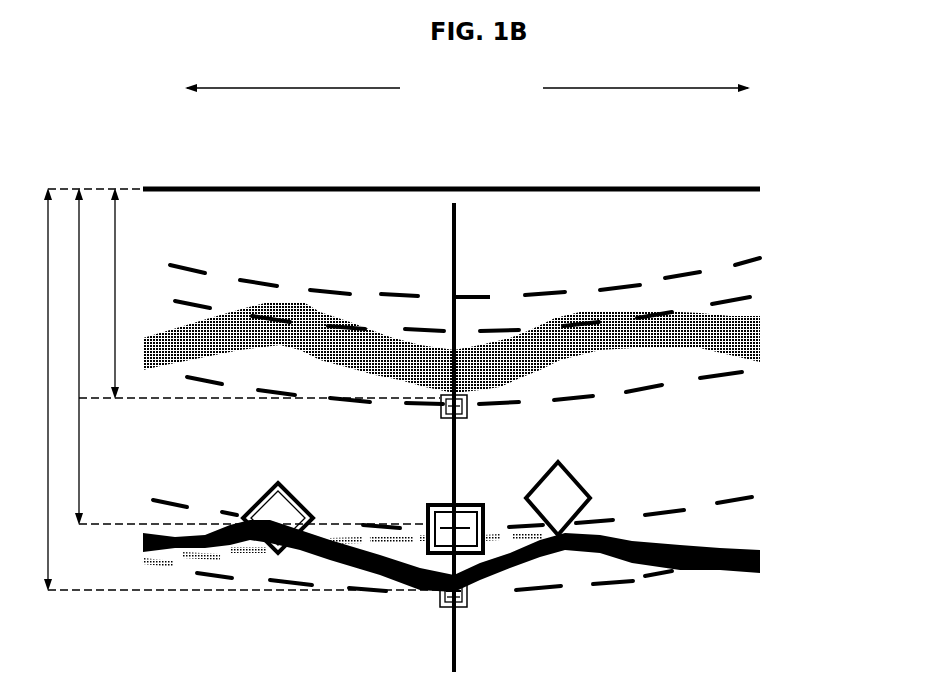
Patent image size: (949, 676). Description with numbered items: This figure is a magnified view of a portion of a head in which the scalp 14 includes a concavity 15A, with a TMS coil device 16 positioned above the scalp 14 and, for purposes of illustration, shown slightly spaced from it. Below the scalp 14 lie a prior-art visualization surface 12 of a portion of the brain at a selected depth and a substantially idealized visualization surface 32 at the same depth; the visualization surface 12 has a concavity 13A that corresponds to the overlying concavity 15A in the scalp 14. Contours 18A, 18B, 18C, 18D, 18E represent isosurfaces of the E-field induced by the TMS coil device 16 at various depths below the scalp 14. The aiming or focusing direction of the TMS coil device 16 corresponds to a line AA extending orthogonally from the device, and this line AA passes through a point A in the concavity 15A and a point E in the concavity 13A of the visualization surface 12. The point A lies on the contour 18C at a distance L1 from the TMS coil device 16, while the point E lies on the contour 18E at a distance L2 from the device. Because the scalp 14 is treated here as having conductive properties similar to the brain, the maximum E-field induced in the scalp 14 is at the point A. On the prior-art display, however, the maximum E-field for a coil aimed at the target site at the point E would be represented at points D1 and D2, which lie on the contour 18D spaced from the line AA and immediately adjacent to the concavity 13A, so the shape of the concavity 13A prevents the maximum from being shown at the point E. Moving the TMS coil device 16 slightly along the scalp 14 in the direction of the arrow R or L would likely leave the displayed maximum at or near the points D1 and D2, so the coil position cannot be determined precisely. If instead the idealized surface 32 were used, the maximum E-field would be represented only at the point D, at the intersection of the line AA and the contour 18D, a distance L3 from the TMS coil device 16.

The TMS coil device 16 is at (762, 187).
The scalp 14 is at (742, 336).
The visualization surface 12 is at (200, 528).
The idealized visualization surface 32 is at (187, 558).
The contour 18A is at (760, 260).
The contour 18B is at (749, 300).
The contour 18C is at (732, 373).
The contour 18D is at (752, 497).
The contour 18E is at (761, 552).
The concavity 15A is at (444, 308).
The concavity 13A is at (412, 498).
The line AA is at (459, 242).
The point A is at (464, 410).
The point D is at (474, 505).
The point E is at (466, 583).
The point D1 is at (288, 492).
The point D2 is at (569, 478).
The distance L1 is at (259, 293).
The distance L2 is at (242, 389).
The distance L3 is at (252, 356).
The arrow L is at (283, 89).
The arrow R is at (654, 89).